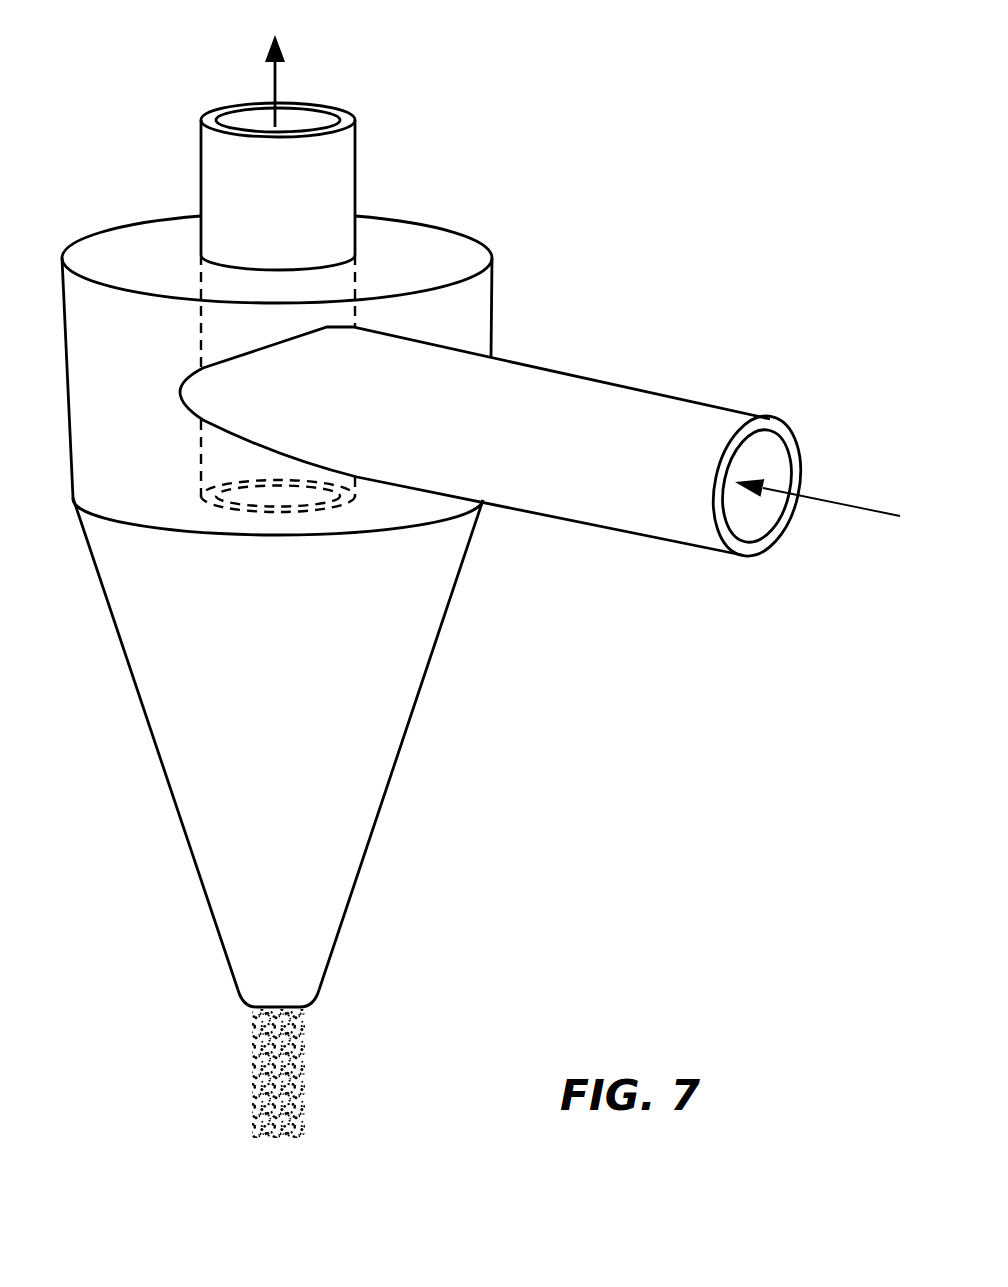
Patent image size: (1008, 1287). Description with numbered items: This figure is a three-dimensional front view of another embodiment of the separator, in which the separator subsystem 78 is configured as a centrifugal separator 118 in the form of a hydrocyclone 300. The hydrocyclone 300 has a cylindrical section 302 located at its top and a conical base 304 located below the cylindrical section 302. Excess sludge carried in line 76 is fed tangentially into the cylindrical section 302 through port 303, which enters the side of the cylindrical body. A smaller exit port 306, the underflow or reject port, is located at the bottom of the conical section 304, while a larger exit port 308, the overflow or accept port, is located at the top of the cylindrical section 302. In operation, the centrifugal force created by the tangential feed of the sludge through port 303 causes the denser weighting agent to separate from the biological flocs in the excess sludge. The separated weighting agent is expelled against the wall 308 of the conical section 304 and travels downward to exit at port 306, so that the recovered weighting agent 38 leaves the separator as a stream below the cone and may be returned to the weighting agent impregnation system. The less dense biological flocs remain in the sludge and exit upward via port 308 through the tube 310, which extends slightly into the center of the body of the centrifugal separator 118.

The separator subsystem 78 is at (563, 106).
The centrifugal separator 118 is at (548, 228).
The hydrocyclone 300 is at (449, 208).
The cylindrical section 302 is at (492, 295).
The tube 310 is at (200, 332).
The exit port 308 is at (330, 105).
The line 76 is at (697, 413).
The port 303 is at (496, 445).
The conical base 304 is at (447, 678).
The exit port 306 is at (303, 1007).
The weighting agent 38 is at (304, 1108).